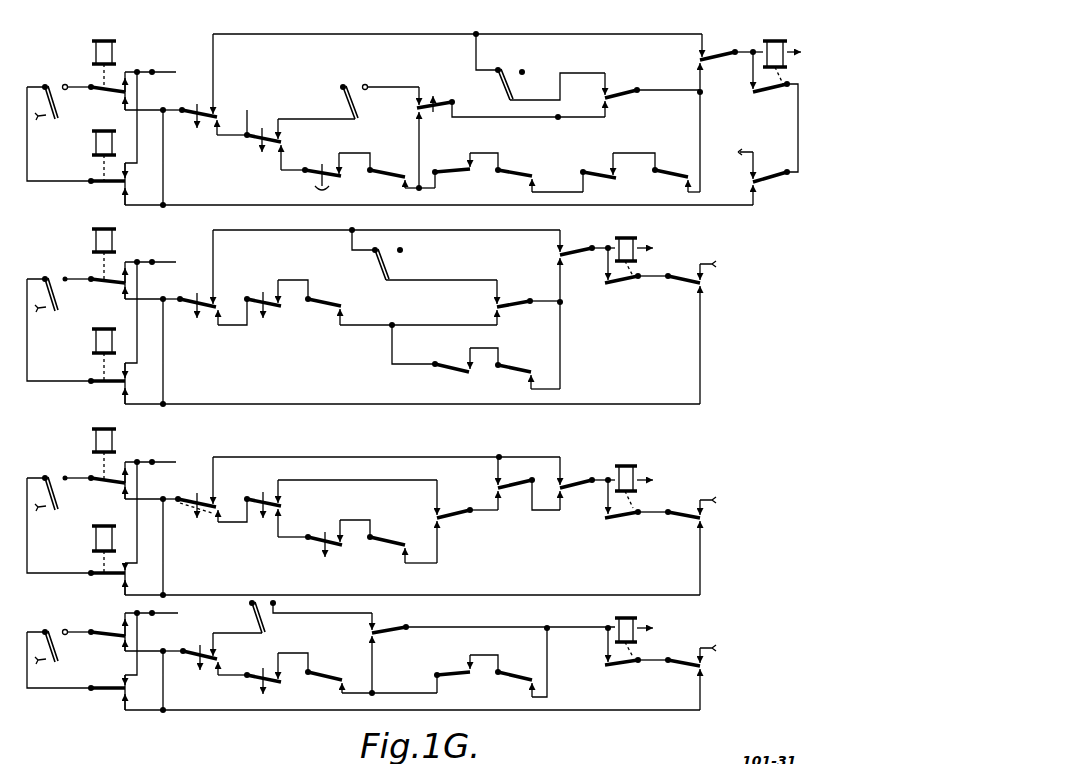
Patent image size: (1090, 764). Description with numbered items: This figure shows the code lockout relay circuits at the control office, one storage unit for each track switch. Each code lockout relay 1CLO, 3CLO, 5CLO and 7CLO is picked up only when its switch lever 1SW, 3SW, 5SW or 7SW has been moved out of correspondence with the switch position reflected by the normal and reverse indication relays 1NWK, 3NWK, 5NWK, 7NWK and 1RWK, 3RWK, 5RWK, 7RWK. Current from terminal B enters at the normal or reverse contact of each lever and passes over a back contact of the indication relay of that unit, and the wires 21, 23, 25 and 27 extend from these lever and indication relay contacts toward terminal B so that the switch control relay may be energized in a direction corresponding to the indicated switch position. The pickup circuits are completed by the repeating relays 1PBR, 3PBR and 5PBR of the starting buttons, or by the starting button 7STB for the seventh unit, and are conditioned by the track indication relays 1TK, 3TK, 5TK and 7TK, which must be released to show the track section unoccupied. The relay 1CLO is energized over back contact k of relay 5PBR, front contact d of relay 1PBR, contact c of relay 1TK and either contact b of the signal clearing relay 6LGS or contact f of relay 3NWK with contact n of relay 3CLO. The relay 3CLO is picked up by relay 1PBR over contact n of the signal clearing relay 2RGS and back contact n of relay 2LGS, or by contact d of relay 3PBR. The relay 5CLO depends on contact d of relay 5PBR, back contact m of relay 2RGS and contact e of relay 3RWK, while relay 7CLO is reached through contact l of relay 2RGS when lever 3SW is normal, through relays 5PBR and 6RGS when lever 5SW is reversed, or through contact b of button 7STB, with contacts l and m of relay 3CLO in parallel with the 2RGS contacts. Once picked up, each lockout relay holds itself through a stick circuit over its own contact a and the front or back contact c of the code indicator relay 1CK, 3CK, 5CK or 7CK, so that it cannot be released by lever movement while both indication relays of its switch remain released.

The wire 21 is at (156, 654).
The wire 23 is at (152, 520).
The wire 25 is at (152, 325).
The wire 27 is at (151, 130).
The switch lever 1SW is at (76, 643).
The switch lever 3SW is at (547, 70).
The switch lever 5SW is at (376, 87).
The switch lever 7SW is at (76, 123).
The reverse switch indication relay 1RWK is at (100, 614).
The reverse switch indication relay 3RWK is at (610, 162).
The reverse switch indication relay 5RWK is at (102, 244).
The reverse switch indication relay 7RWK is at (107, 52).
The normal switch indication relay 1NWK is at (100, 674).
The normal switch indication relay 3NWK is at (100, 540).
The normal switch indication relay 5NWK is at (463, 161).
The normal switch indication relay 7NWK is at (100, 146).
The repeating relay 1PBR is at (199, 84).
The repeating relay 3PBR is at (332, 527).
The repeating relay 5PBR is at (292, 133).
The track indication relay 1TK is at (371, 665).
The track indication relay 3TK is at (402, 530).
The track indication relay 5TK is at (401, 296).
The track indication relay 7TK is at (401, 163).
The starting button 7STB is at (330, 162).
The signal clearing relay 2RGS is at (629, 85).
The signal clearing relay 6RGS is at (485, 125).
The signal clearing relay 2LGS is at (723, 102).
The signal clearing relay 6LGS is at (467, 519).
The code lockout relay 1CLO is at (634, 632).
The code lockout relay 3CLO is at (674, 162).
The code lockout relay 5CLO is at (539, 163).
The code lockout relay 7CLO is at (781, 92).
The code indicator relay 1CK is at (697, 668).
The code indicator relay 3CK is at (697, 538).
The code indicator relay 5CK is at (697, 325).
The code indicator relay 7CK is at (756, 174).